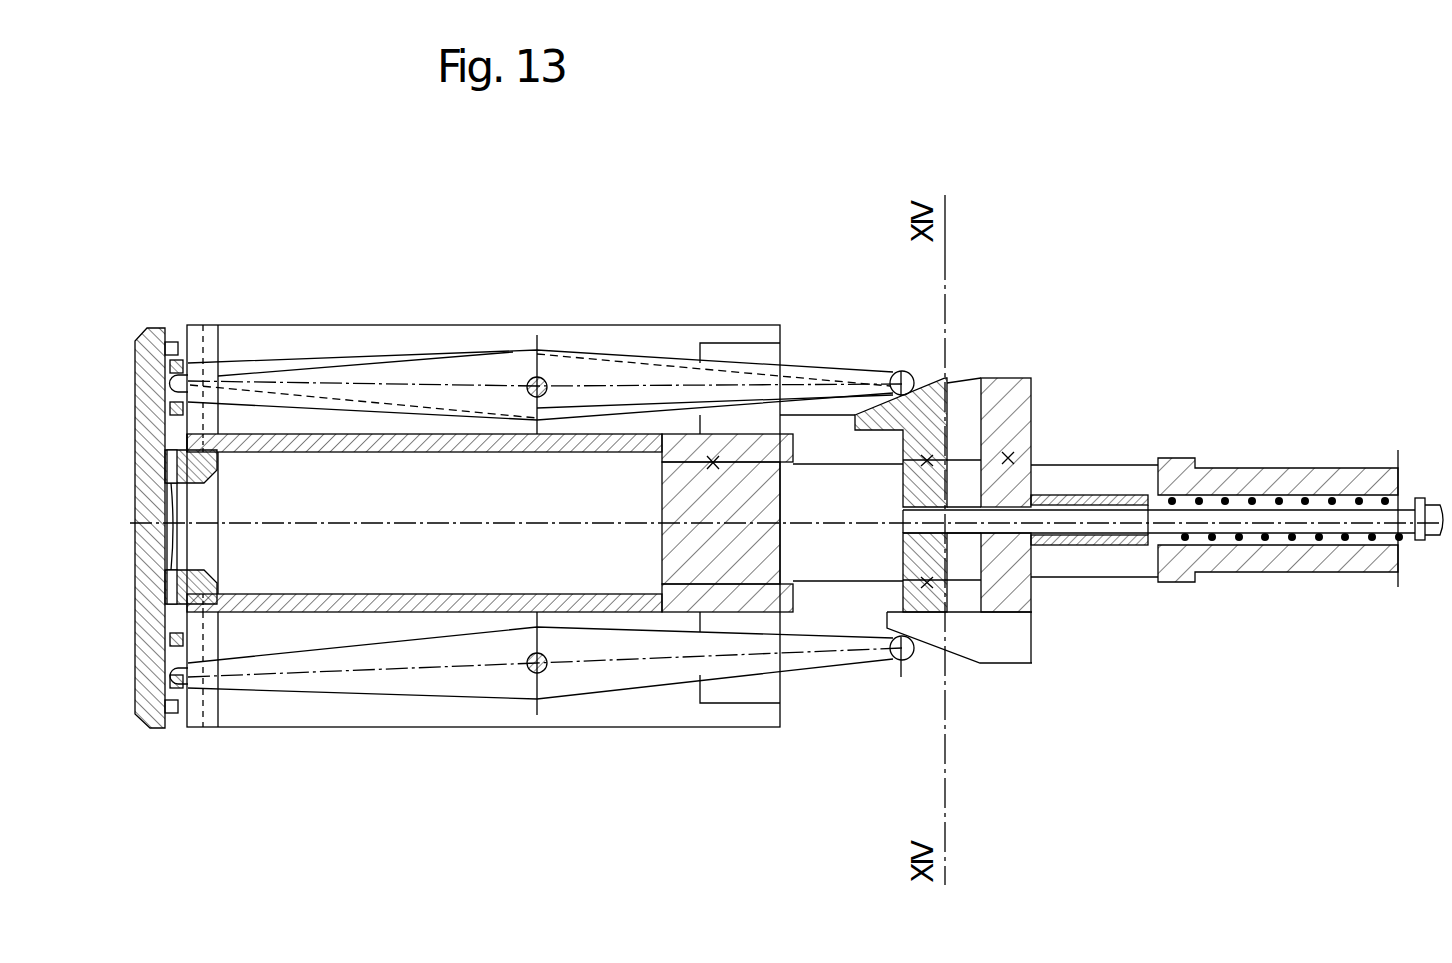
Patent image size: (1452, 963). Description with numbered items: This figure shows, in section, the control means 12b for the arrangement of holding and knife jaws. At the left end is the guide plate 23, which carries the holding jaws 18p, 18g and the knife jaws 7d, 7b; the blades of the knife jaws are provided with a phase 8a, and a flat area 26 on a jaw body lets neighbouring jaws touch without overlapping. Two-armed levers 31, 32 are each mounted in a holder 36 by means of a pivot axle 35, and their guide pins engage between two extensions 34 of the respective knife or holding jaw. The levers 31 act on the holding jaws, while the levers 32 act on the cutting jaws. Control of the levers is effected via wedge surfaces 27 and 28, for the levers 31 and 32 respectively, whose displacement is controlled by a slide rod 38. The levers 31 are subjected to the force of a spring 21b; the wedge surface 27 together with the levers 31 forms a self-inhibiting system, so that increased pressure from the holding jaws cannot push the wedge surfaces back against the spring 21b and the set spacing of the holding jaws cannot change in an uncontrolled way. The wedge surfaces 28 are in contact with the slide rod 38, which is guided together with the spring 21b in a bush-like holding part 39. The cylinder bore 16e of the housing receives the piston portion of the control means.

The control means 12b is at (363, 305).
The holder 36 is at (348, 712).
The guide plate 23 is at (135, 715).
The holding jaw 18p is at (170, 488).
The holding jaw 18g is at (150, 575).
The knife jaw 7d is at (137, 485).
The knife jaw 7b is at (155, 620).
The phase 8a is at (180, 517).
The cylinder bore 16e is at (180, 537).
The flat area 26 is at (223, 730).
The extensions 34 is at (186, 330).
The two-armed lever 32 is at (612, 372).
The two-armed lever 31 is at (837, 402).
The pivot axle 35 is at (527, 382).
The wedge surface 27 is at (952, 634).
The wedge surface 28 is at (927, 388).
The spring 21b is at (1151, 464).
The bush-like holding part 39 is at (1302, 477).
The slide rod 38 is at (1103, 528).